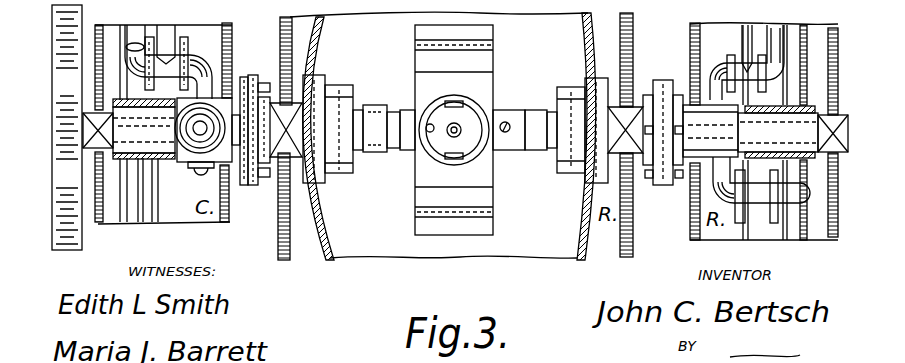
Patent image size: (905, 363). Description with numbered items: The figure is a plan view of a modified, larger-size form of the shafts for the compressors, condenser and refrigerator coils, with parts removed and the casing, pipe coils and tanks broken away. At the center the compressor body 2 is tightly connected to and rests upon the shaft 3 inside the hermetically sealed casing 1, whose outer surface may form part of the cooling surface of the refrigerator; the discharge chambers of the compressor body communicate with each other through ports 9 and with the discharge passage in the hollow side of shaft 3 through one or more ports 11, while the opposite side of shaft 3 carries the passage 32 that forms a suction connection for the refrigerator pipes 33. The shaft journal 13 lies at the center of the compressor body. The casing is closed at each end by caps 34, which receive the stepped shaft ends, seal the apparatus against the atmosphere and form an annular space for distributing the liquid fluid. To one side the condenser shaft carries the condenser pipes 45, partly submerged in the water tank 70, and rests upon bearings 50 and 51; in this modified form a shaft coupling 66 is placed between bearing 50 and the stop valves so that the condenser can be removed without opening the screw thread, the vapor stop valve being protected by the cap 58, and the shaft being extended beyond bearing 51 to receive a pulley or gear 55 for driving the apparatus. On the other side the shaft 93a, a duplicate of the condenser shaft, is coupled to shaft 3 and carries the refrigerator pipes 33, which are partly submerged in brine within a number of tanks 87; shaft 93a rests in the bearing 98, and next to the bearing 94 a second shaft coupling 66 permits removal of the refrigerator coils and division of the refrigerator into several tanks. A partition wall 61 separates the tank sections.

The casing 1 is at (585, 217).
The compressor body 2 is at (454, 130).
The shaft 3 is at (534, 123).
The ports 9 is at (467, 103).
The ports 11 is at (427, 133).
The shaft journal 13 is at (452, 163).
The passage 32 is at (506, 123).
The pipes 33 is at (787, 43).
The caps 34 is at (455, 129).
The pipes 45 is at (164, 53).
The bearing 50 is at (282, 153).
The bearing 51 is at (100, 137).
The pulley or gear 55 is at (69, 127).
The cap 58 is at (229, 112).
The partition wall 61 is at (122, 208).
The shaft coupling 66 is at (292, 28).
The tank 70 is at (101, 33).
The tank 87 is at (290, 195).
The shaft 93a is at (747, 57).
The bearing 94 is at (625, 128).
The bearing 98 is at (827, 115).